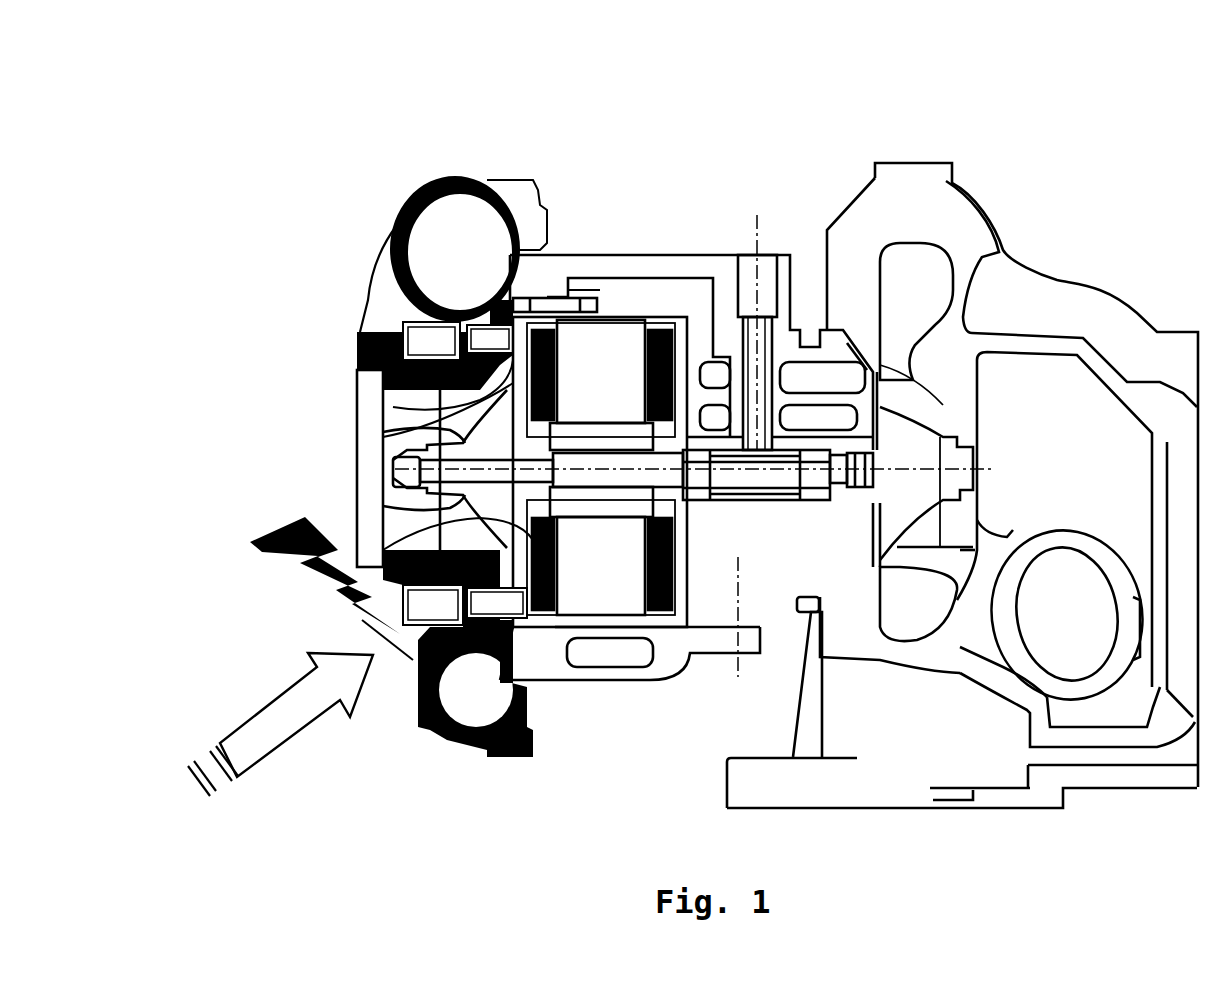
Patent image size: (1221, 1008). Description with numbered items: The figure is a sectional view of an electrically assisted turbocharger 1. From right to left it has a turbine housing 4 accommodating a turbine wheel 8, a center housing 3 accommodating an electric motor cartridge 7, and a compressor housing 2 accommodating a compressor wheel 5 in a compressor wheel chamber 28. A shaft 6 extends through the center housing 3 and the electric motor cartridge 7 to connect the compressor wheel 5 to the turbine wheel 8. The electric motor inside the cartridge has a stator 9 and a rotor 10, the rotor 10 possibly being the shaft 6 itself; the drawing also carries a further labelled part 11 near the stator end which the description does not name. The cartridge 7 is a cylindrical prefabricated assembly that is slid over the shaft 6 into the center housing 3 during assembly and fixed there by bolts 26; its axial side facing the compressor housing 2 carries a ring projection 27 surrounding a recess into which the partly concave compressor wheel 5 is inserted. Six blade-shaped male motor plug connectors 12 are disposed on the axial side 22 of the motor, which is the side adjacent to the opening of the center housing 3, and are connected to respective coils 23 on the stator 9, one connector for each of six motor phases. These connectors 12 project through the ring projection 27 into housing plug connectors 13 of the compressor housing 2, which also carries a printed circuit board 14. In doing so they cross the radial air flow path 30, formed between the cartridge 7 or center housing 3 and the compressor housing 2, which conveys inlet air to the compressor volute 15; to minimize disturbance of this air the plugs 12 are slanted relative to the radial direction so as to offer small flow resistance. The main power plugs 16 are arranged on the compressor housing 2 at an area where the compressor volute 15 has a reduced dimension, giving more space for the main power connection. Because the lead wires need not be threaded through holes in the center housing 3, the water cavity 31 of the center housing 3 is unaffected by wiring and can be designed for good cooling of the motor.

The turbocharger 1 is at (787, 102).
The compressor housing 2 is at (412, 190).
The center housing 3 is at (620, 257).
The turbine housing 4 is at (993, 197).
The compressor wheel 5 is at (383, 432).
The shaft 6 is at (393, 470).
The electric motor cartridge 7 is at (687, 652).
The turbine wheel 8 is at (927, 405).
The stator 9 is at (607, 603).
The rotor 10 is at (640, 455).
The stator winding 11 is at (527, 685).
The motor plug connectors 12 is at (513, 610).
The housing plug connectors 13 is at (427, 653).
The printed circuit board 14 is at (393, 640).
The compressor volute 15 is at (463, 213).
The main power plugs 16 is at (337, 633).
The axial side 22 is at (533, 540).
The coils 23 is at (673, 573).
The bolts 26 is at (578, 290).
The ring projection 27 is at (560, 300).
The compressor wheel chamber 28 is at (393, 407).
The radial air flow path 30 is at (533, 240).
The water cavity 31 is at (637, 657).